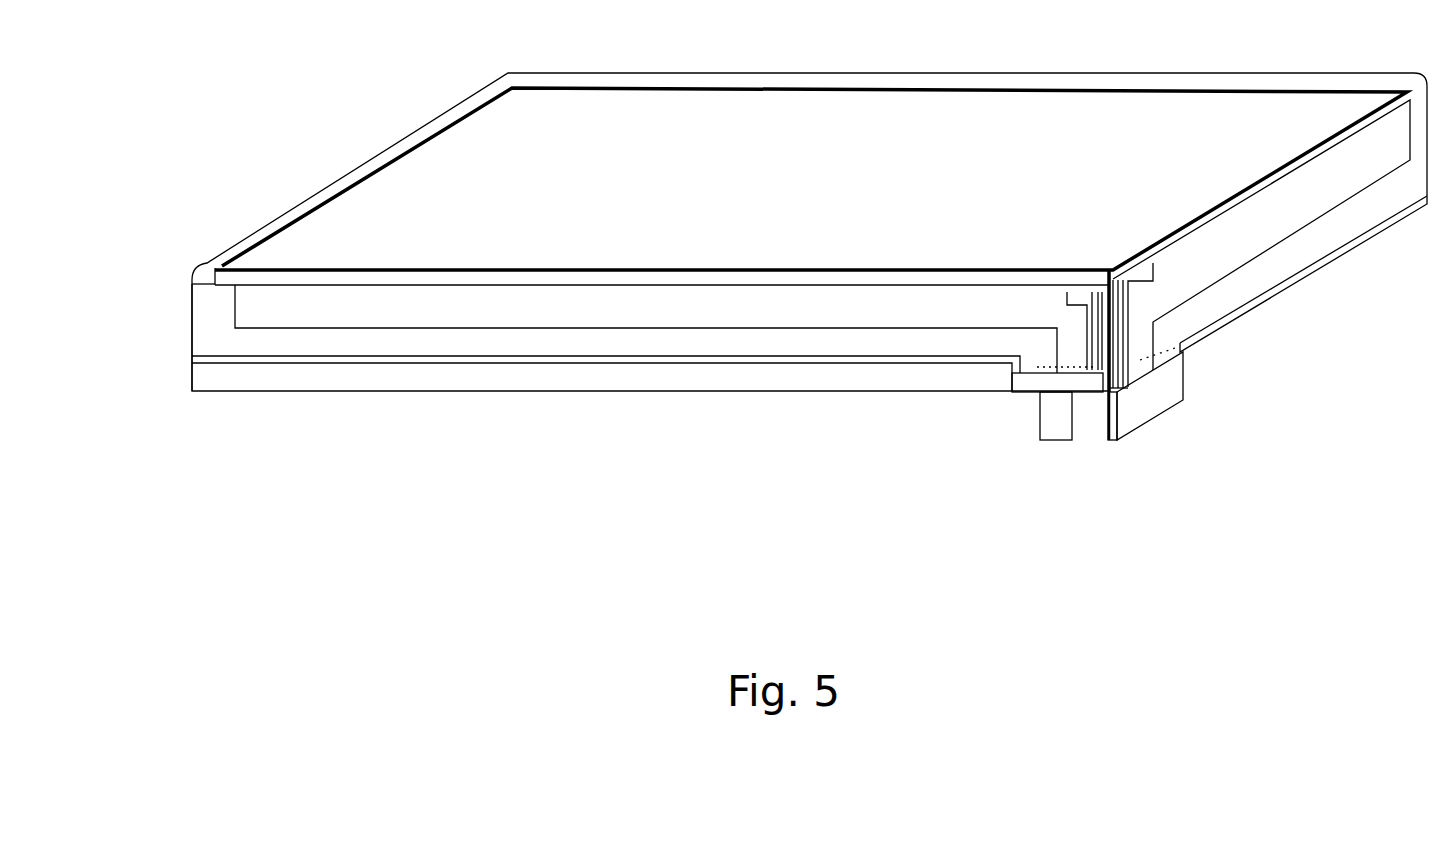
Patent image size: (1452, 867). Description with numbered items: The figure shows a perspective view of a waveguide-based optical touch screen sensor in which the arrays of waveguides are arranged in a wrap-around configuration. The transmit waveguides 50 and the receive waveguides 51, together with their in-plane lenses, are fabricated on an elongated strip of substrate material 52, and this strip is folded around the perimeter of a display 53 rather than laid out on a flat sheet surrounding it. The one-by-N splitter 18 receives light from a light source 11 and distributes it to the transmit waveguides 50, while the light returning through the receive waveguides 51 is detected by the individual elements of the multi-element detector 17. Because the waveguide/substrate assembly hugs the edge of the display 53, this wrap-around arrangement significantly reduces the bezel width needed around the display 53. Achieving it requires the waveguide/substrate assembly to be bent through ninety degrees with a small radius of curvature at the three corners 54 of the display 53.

The light source 11 is at (1055, 423).
The multi-element detector 17 is at (1145, 410).
The 1×N splitter 18 is at (1025, 391).
The transmit waveguides 50 is at (673, 363).
The receive waveguides 51 is at (1280, 247).
The substrate material 52 is at (203, 330).
The display 53 is at (811, 240).
The corners 54 is at (518, 93).